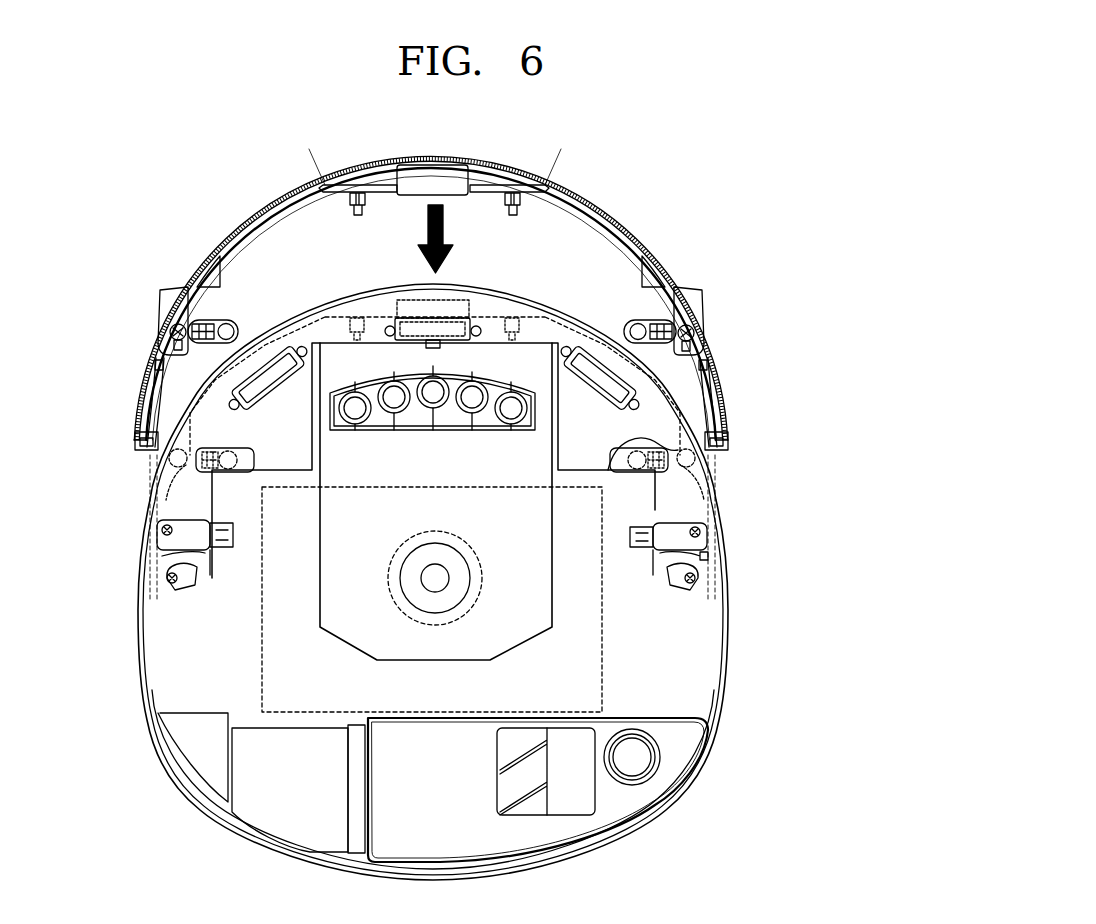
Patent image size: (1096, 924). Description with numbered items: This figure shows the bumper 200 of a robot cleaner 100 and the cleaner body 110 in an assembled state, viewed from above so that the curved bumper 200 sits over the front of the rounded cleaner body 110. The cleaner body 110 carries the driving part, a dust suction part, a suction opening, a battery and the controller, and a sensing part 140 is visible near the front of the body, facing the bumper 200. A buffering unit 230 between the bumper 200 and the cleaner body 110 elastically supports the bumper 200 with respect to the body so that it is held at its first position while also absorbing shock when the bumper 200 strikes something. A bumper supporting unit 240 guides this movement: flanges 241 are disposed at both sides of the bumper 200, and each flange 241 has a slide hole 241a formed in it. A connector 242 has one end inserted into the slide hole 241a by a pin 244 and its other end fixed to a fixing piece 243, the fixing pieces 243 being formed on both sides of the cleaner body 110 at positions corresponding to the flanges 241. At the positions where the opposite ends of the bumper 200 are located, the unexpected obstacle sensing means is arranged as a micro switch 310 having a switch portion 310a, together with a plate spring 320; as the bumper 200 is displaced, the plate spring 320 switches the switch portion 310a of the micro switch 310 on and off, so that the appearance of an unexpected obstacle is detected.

The robot cleaner 100 is at (730, 148).
The cleaner body 110 is at (700, 632).
The sensing part 140 is at (416, 327).
The bumper 200 is at (617, 240).
The buffering unit 230 is at (522, 206).
The bumper supporting unit 240 is at (795, 474).
The flange 241 is at (712, 362).
The slide hole 241a is at (700, 350).
The connector 242 is at (658, 345).
The fixing piece 243 is at (695, 458).
The pin 244 is at (698, 330).
The micro switch 310 is at (684, 531).
The switch portion 310a is at (705, 560).
The plate spring 320 is at (700, 577).